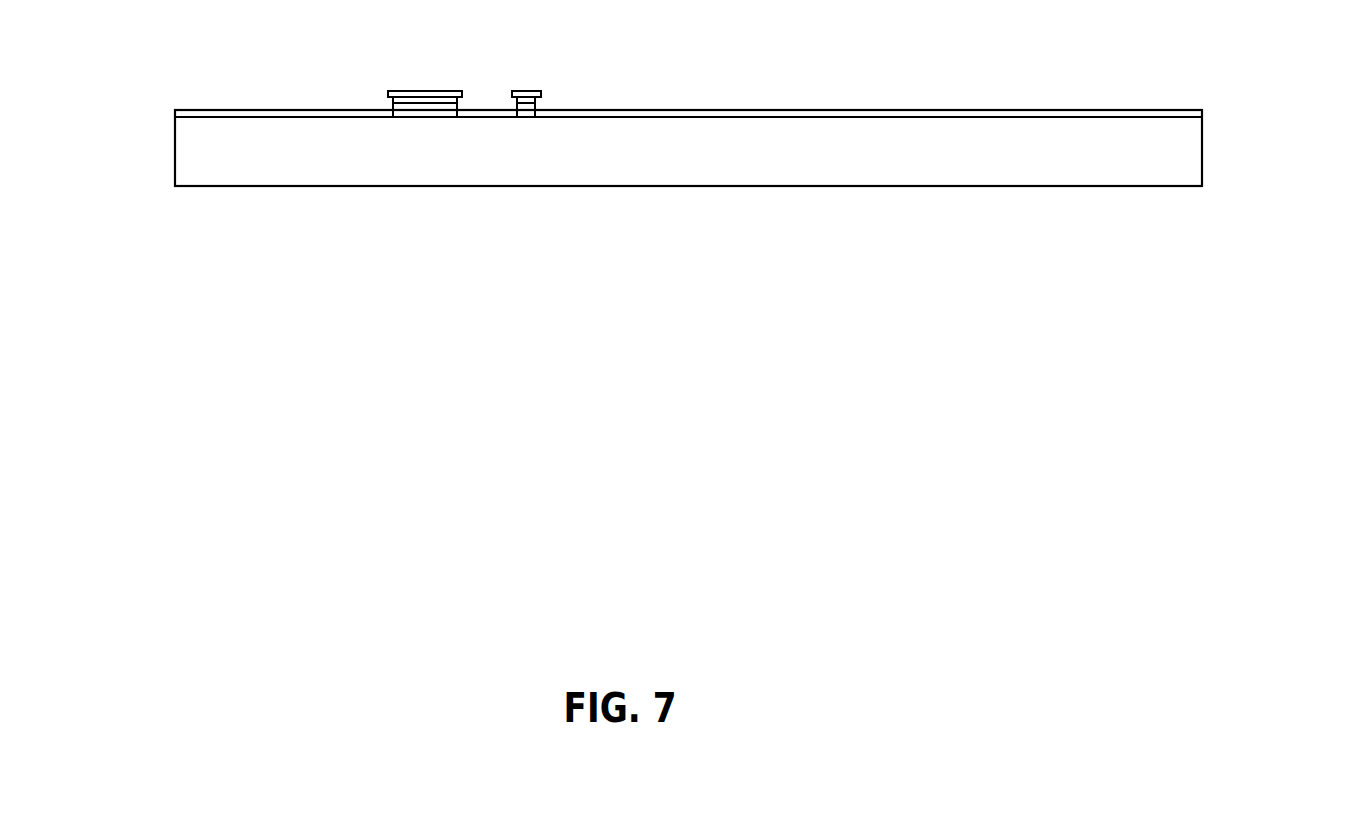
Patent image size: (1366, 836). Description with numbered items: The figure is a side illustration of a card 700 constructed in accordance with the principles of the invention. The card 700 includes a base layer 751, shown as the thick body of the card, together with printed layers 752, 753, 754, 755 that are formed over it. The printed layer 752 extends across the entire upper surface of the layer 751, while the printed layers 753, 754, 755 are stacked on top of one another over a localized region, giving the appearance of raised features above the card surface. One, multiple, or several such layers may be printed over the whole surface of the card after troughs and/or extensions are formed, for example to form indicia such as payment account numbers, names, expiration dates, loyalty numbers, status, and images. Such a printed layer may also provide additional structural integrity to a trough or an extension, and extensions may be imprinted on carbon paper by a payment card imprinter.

The card 700 is at (1320, 175).
The layer 751 is at (178, 176).
The printed layer 752 is at (175, 112).
The printed layer 753 is at (391, 109).
The printed layer 754 is at (391, 108).
The printed layer 755 is at (391, 108).